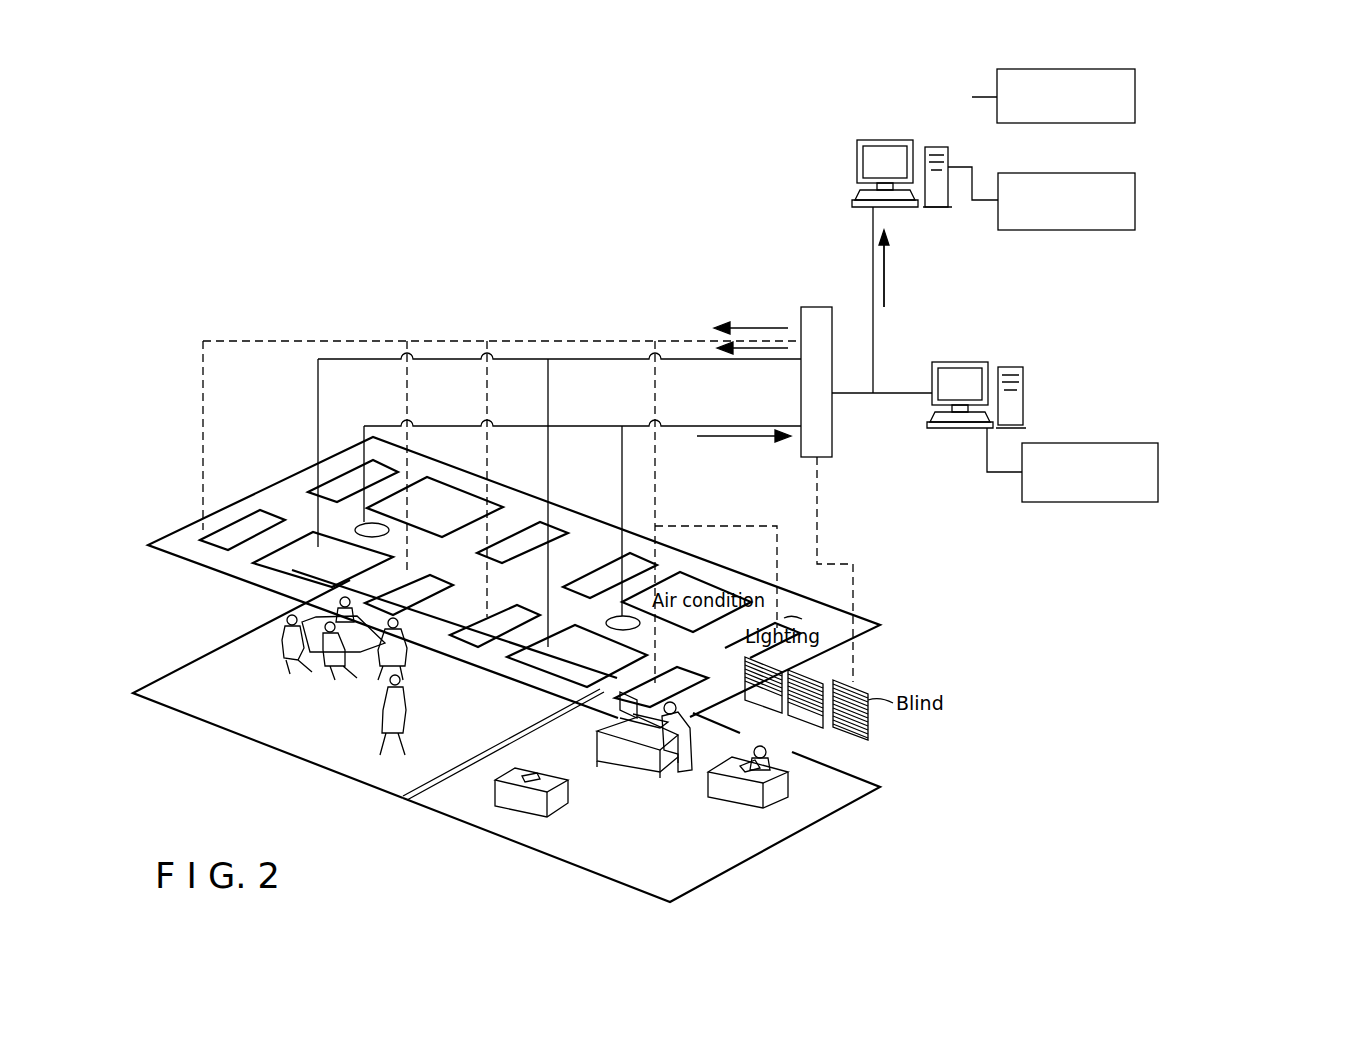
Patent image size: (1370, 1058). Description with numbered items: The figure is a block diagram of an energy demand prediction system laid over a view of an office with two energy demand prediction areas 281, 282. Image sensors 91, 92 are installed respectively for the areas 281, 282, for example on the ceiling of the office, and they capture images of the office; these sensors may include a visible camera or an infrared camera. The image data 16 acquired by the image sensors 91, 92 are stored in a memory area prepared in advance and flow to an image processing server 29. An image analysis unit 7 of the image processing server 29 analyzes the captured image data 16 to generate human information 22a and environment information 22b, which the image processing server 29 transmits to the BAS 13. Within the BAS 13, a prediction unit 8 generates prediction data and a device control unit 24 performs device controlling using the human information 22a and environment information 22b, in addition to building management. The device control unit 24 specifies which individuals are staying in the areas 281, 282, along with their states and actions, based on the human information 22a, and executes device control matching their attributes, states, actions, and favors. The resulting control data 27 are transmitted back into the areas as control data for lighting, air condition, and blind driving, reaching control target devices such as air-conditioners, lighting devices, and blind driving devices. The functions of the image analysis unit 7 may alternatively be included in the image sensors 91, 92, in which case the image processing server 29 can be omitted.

The BAS 13 is at (886, 140).
The prediction unit 8 is at (1135, 97).
The device control unit 24 is at (1135, 200).
The human information 22a is at (884, 272).
The environment information 22b is at (1034, 277).
The control data 27 is at (843, 527).
The image data 16 is at (737, 438).
The image processing server 29 is at (1023, 393).
The image analysis unit 7 is at (1158, 470).
The image sensor 91 is at (360, 524).
The image sensor 92 is at (612, 620).
The energy demand prediction area 281 is at (318, 748).
The energy demand prediction area 282 is at (555, 850).